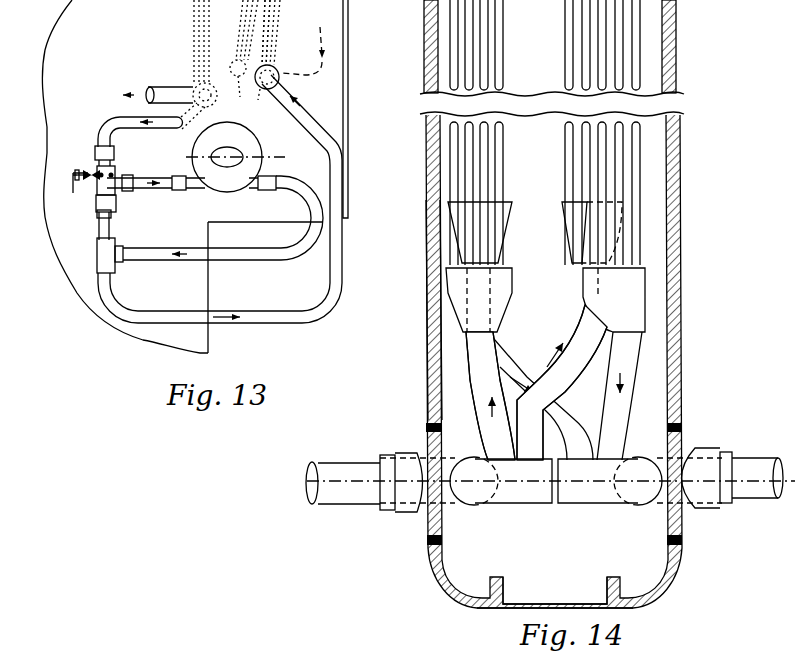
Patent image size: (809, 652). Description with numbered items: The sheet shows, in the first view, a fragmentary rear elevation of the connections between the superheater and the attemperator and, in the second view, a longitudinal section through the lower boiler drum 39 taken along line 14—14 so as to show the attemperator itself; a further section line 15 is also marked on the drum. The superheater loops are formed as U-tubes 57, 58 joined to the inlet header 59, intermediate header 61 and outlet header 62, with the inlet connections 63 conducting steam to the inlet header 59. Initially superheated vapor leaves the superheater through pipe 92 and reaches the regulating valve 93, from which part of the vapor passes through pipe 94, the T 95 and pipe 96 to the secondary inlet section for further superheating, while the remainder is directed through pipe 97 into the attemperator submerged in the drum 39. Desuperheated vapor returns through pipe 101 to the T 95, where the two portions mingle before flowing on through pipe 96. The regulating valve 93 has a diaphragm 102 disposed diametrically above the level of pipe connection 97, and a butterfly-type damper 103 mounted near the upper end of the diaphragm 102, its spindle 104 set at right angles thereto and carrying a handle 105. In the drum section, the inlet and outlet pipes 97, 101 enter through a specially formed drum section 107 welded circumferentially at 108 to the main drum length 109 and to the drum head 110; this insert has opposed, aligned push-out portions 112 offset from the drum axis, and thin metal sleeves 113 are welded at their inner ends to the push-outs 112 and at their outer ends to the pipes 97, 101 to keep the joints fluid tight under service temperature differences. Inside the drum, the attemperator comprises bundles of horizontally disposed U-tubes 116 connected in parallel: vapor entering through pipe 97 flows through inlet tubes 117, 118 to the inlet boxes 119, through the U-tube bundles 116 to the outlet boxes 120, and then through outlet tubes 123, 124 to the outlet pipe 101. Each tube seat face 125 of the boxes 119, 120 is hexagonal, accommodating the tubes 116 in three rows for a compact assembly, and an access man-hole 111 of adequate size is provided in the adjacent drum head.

In FIG. 13, the section line 14— 14 is at (275, 168).
In FIG. 14, the section line 15- 15 is at (760, 462).
In FIG. 13, the lower boiler drum 39 is at (212, 196).
In FIG. 14, the lower boiler drum 39 is at (680, 298).
In FIG. 13, the U-tubes 57 is at (280, 22).
In FIG. 13, the U-tubes 58 is at (193, 13).
In FIG. 13, the inlet header 59 is at (298, 132).
In FIG. 13, the intermediate header 61 is at (238, 90).
In FIG. 13, the outlet header 62 is at (198, 88).
In FIG. 13, the inlet connections 63 is at (300, 72).
In FIG. 13, the pipe 92 is at (122, 117).
In FIG. 13, the regulating valve 93 is at (95, 152).
In FIG. 13, the pipe 94 is at (112, 228).
In FIG. 13, the T 95 is at (97, 257).
In FIG. 13, the pipe 96 is at (157, 317).
In FIG. 13, the pipe 97 is at (150, 189).
In FIG. 14, the pipe 97 is at (335, 462).
In FIG. 13, the pipe 101 is at (240, 262).
In FIG. 14, the pipe 101 is at (778, 502).
In FIG. 13, the diaphragm 102 is at (103, 193).
In FIG. 13, the damper 103 is at (103, 168).
In FIG. 13, the spindle 104 is at (72, 163).
In FIG. 13, the handle 105 is at (73, 193).
In FIG. 14, the drum section 107 is at (425, 520).
In FIG. 14, the circumferential welds 108 is at (683, 425).
In FIG. 14, the main drum length 109 is at (682, 375).
In FIG. 14, the drum head 110 is at (663, 598).
In FIG. 14, the access man-hole 111 is at (517, 583).
In FIG. 14, the push-out portions 112 is at (415, 470).
In FIG. 14, the sleeves 113 is at (395, 515).
In FIG. 14, the U-tubes 116 is at (497, 77).
In FIG. 14, the inlet tube 117 is at (480, 412).
In FIG. 14, the inlet tube 118 is at (558, 367).
In FIG. 14, the inlet boxes 119 is at (548, 215).
In FIG. 14, the outlet boxes 120 is at (549, 287).
In FIG. 14, the outlet tube 123 is at (507, 360).
In FIG. 14, the outlet tube 124 is at (610, 390).
In FIG. 14, the tube seat face 125 is at (503, 212).